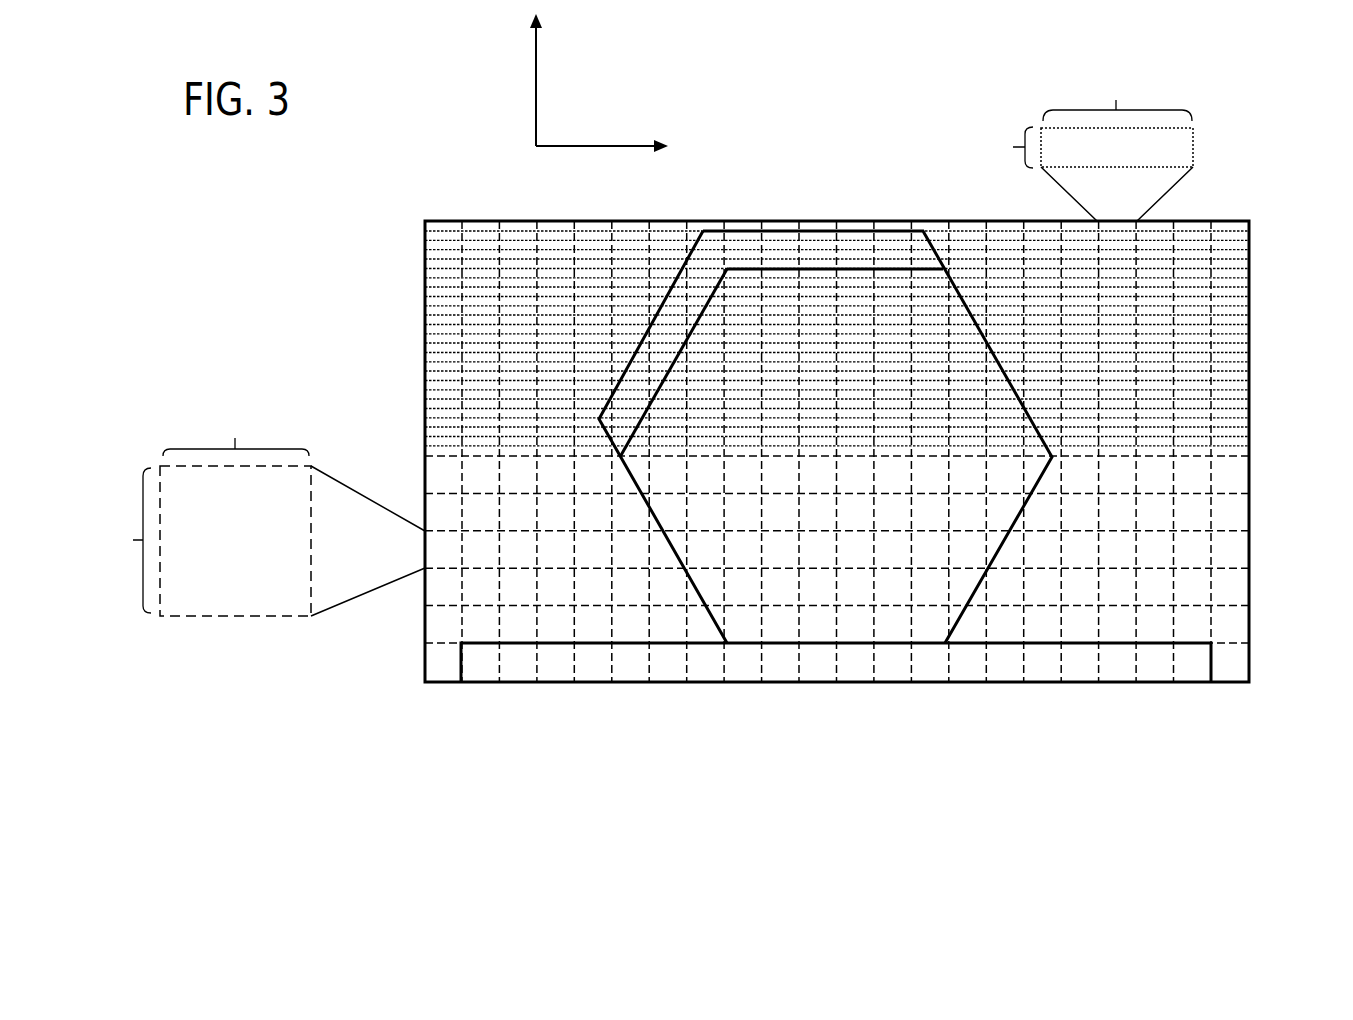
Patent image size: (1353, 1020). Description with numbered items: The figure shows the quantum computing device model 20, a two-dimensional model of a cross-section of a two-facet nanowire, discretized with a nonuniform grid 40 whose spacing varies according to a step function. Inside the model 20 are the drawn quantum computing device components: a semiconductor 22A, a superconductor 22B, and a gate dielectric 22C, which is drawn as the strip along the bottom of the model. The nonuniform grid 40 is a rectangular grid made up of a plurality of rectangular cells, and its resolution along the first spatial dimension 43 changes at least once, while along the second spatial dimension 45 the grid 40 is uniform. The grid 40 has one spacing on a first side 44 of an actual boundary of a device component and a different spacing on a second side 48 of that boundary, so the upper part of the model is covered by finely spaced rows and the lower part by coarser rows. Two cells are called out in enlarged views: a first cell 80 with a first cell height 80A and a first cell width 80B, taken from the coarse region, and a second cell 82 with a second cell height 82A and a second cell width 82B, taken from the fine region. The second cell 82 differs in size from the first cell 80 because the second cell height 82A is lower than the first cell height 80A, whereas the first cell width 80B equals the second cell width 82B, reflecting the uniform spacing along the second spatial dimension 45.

The quantum computing device model 20 is at (1249, 452).
The semiconductor 22A is at (1020, 502).
The superconductor 22B is at (603, 432).
The gate dielectric 22C is at (460, 662).
The nonuniform grid 40 is at (432, 473).
The first spatial dimension 43 is at (535, 90).
The first side 44 is at (1272, 336).
The second spatial dimension 45 is at (592, 147).
The second side 48 is at (1272, 542).
The first cell 80 is at (222, 553).
The first cell height 80A is at (120, 540).
The first cell width 80B is at (236, 435).
The second cell 82 is at (1104, 160).
The second cell height 82A is at (1001, 147).
The second cell width 82B is at (1117, 98).